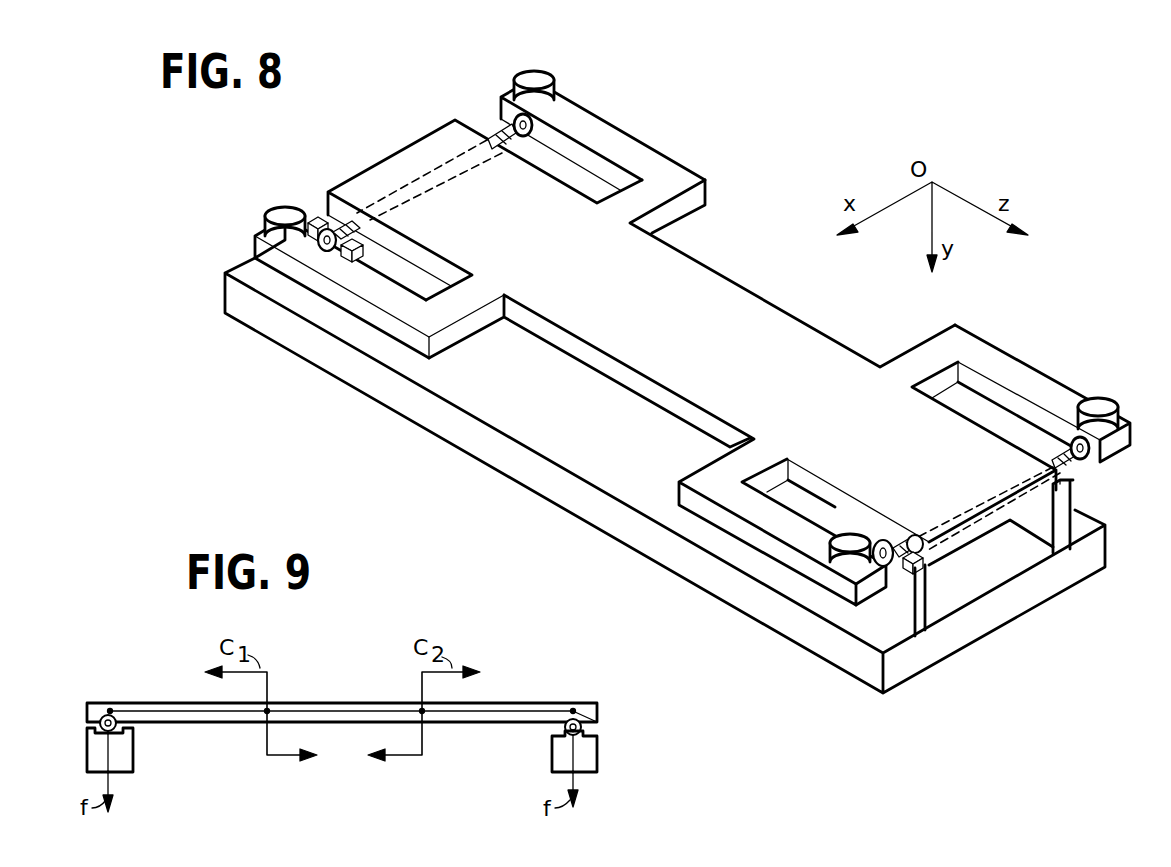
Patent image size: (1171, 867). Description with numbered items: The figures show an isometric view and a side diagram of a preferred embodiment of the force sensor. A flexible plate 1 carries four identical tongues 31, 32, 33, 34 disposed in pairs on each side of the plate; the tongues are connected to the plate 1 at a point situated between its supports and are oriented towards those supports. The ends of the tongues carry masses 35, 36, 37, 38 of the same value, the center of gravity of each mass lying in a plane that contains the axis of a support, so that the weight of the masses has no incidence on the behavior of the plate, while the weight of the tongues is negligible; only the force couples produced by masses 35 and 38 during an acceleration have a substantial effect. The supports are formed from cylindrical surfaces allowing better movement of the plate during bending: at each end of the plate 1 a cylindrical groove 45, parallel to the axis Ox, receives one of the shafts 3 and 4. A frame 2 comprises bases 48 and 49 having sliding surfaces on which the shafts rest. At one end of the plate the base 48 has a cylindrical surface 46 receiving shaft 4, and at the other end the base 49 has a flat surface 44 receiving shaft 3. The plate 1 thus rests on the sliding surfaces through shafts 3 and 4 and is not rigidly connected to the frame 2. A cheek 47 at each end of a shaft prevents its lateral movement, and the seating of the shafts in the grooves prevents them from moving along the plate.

In FIG. 8, the plate 1 is at (738, 306).
In FIG. 9, the plate 1 is at (330, 706).
In FIG. 8, the frame 2 is at (503, 463).
In FIG. 8, the shaft 3 is at (500, 130).
In FIG. 9, the shaft 3 is at (87, 705).
In FIG. 8, the shaft 4 is at (1082, 462).
In FIG. 9, the shaft 4 is at (586, 732).
In FIG. 8, the tongue 31 is at (622, 150).
In FIG. 8, the tongue 32 is at (318, 262).
In FIG. 8, the tongue 33 is at (1008, 372).
In FIG. 8, the tongue 34 is at (747, 503).
In FIG. 8, the mass 35 is at (548, 82).
In FIG. 8, the mass 36 is at (282, 222).
In FIG. 8, the mass 37 is at (1095, 400).
In FIG. 8, the mass 38 is at (848, 540).
In FIG. 8, the flat surface 44 is at (344, 260).
In FIG. 9, the flat surface 44 is at (92, 745).
In FIG. 8, the cylindrical groove 45 is at (917, 533).
In FIG. 9, the cylindrical groove 45 is at (580, 716).
In FIG. 8, the cylindrical surface 46 is at (905, 570).
In FIG. 9, the cylindrical surface 46 is at (598, 752).
In FIG. 8, the cheek 47 is at (886, 538).
In FIG. 8, the base 48 is at (915, 607).
In FIG. 9, the base 48 is at (557, 757).
In FIG. 8, the base 49 is at (318, 216).
In FIG. 9, the base 49 is at (128, 753).